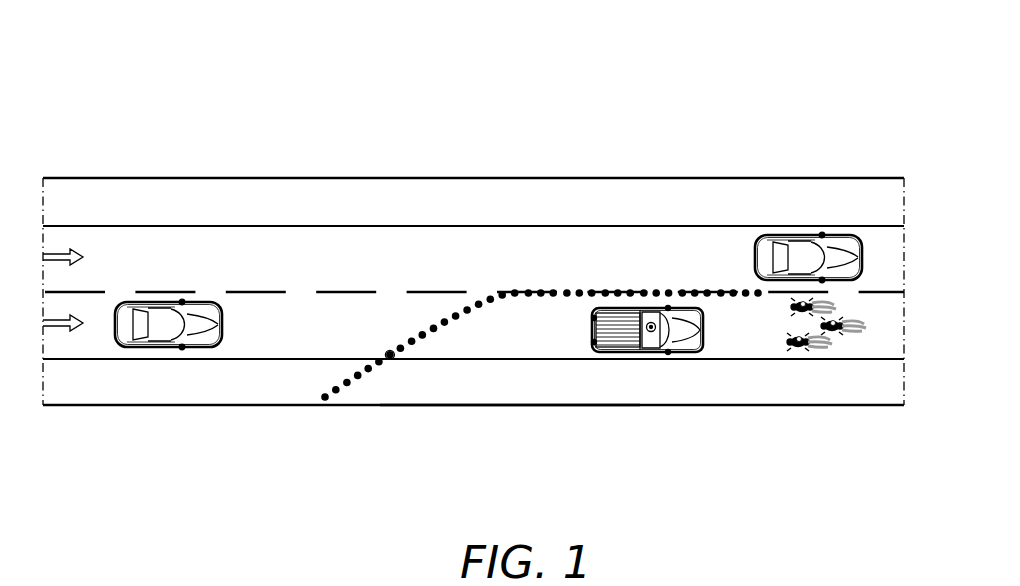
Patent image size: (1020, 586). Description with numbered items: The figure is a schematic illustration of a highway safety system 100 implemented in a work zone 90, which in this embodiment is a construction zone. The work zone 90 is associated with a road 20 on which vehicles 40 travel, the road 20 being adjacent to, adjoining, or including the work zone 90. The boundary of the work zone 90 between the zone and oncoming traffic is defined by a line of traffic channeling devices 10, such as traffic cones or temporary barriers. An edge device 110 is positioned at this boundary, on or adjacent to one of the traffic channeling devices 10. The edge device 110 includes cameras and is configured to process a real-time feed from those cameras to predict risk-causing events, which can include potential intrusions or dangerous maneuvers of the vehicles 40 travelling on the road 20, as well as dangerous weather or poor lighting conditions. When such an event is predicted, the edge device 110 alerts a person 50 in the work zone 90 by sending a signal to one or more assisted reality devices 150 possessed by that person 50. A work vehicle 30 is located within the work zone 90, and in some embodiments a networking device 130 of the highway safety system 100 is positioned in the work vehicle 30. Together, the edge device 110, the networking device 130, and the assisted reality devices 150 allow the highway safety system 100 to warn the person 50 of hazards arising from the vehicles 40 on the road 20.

The highway safety system 100 is at (633, 82).
The road 20 is at (320, 247).
The work zone 90 is at (511, 404).
The traffic channeling devices 10 is at (427, 330).
The edge device 110 is at (387, 357).
The vehicles 40 is at (165, 304).
The work vehicle 30 is at (628, 318).
The networking device 130 is at (650, 330).
The person 50 is at (828, 336).
The assisted reality devices 150 is at (800, 350).